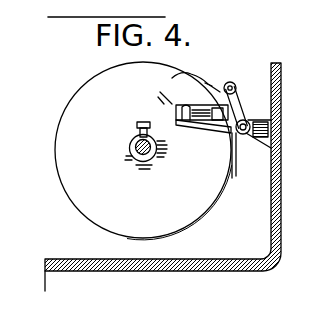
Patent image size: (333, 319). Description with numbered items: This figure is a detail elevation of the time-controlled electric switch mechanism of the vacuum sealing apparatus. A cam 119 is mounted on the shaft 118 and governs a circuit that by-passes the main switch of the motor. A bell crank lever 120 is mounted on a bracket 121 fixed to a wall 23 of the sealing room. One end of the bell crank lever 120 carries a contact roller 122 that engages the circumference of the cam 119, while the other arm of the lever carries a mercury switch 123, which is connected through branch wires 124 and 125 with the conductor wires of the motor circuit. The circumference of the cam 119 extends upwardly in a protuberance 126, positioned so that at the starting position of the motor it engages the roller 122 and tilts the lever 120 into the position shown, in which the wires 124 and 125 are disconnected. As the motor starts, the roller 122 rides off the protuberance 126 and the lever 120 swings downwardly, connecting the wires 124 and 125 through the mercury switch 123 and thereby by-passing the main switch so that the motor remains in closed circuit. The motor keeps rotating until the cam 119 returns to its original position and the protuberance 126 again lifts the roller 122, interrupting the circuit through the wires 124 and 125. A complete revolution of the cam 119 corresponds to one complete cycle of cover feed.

The frame wall 23 is at (271, 64).
The shaft 118 is at (147, 150).
The cam 119 is at (70, 110).
The bell crank lever 120 is at (234, 158).
The bracket 121 is at (262, 118).
The contact roller 122 is at (247, 76).
The mercury switch 123 is at (202, 98).
The branch wire 124 is at (158, 97).
The branch wire 125 is at (173, 103).
The protuberance 126 is at (207, 83).